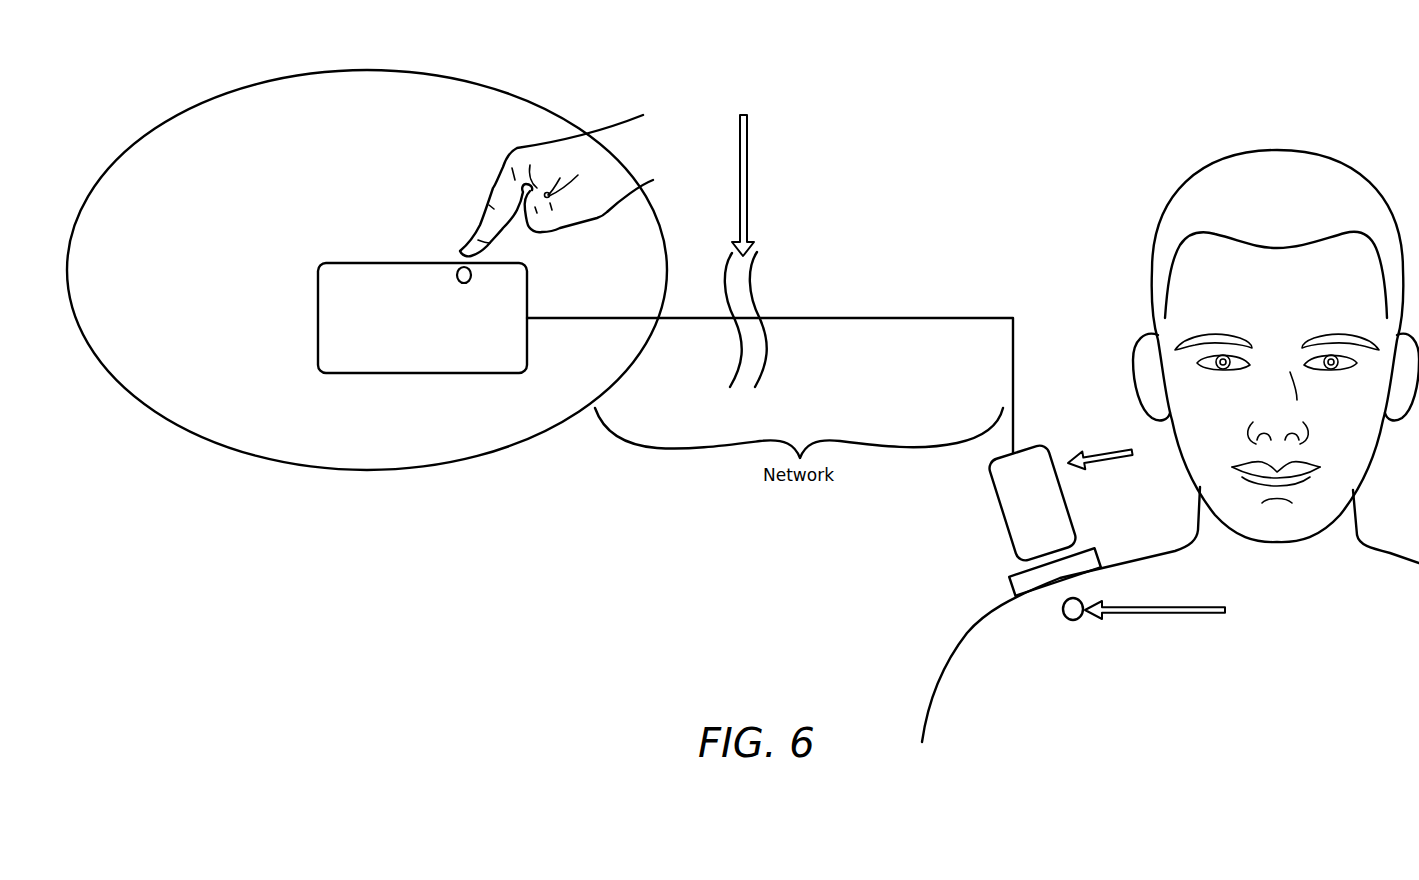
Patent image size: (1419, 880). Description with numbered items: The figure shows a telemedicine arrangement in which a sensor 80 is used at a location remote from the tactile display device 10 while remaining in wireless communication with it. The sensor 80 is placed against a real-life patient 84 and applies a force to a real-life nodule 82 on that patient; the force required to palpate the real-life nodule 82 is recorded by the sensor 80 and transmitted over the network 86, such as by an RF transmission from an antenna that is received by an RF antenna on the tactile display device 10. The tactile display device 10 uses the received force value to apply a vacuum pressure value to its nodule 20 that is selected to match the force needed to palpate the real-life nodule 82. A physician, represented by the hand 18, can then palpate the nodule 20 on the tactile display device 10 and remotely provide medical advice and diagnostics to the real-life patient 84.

The tactile display device 10 is at (385, 252).
The hand 18 is at (613, 123).
The nodule 20 is at (457, 282).
The sensor 80 is at (997, 513).
The real-life nodule 82 is at (1062, 620).
The real-life patient 84 is at (1174, 197).
The network 86 is at (748, 133).